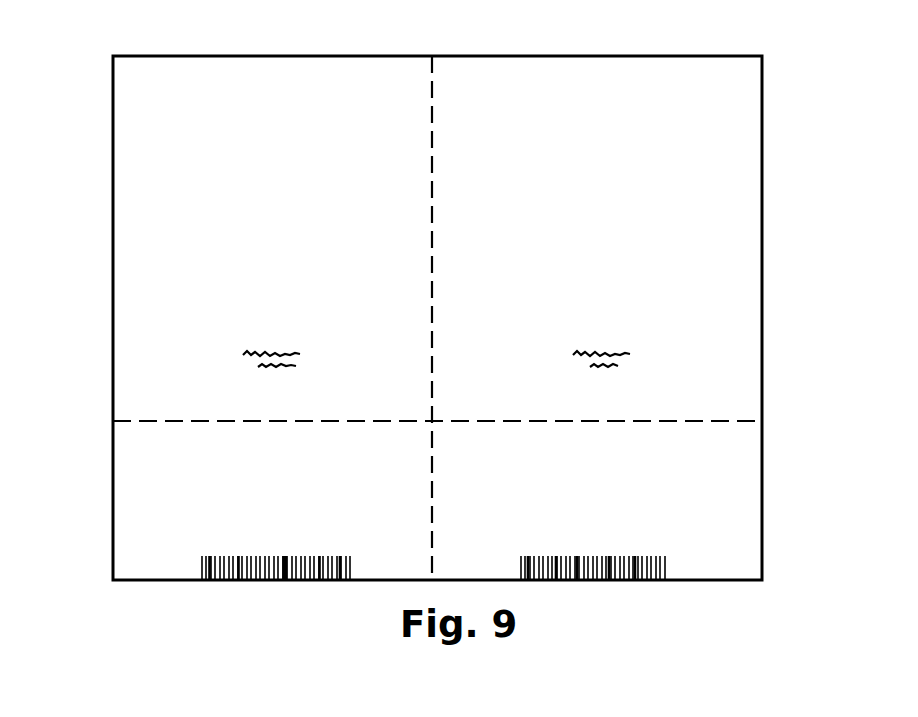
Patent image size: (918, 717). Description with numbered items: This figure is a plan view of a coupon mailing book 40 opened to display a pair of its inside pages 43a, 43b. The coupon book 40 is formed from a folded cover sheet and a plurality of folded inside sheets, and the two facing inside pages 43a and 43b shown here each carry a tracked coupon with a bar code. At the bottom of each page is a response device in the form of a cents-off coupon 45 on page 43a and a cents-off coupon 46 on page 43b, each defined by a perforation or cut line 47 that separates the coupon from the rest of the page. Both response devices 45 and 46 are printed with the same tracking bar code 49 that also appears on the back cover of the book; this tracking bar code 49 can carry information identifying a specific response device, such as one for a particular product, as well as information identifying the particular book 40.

The coupon book 40 is at (542, 56).
The inside page 43a is at (133, 282).
The inside page 43b is at (745, 165).
The cents-off coupon 45 is at (123, 489).
The cents-off coupon 46 is at (748, 478).
The perforation or cut line 47 is at (728, 420).
The tracking bar code 49 is at (298, 558).